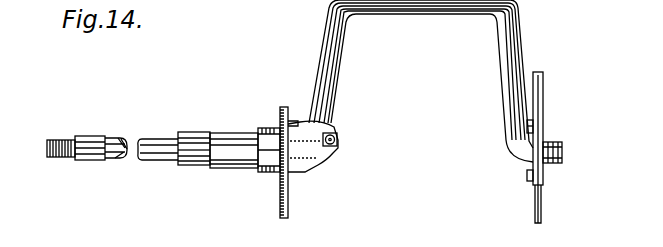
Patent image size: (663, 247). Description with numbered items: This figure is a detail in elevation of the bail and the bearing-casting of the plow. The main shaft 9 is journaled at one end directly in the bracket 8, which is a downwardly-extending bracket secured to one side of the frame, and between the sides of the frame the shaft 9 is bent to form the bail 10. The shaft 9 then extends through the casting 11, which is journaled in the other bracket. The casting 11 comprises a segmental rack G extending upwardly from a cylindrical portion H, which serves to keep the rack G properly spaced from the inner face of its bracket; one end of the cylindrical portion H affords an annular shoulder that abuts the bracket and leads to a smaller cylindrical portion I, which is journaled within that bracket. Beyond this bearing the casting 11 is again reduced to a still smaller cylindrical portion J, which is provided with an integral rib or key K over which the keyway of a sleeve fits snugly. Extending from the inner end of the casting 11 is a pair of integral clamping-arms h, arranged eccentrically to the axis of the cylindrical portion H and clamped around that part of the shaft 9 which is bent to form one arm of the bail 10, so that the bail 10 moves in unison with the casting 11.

The bracket 8 is at (548, 138).
The main shaft 9 is at (157, 157).
The bail 10 is at (520, 63).
The casting 11 is at (288, 123).
The rib or key K is at (197, 137).
The cylindrical portion J is at (203, 165).
The cylindrical portion I is at (237, 170).
The cylindrical portion H is at (277, 173).
The segmental rack G is at (290, 200).
The clamping-arms h is at (338, 132).